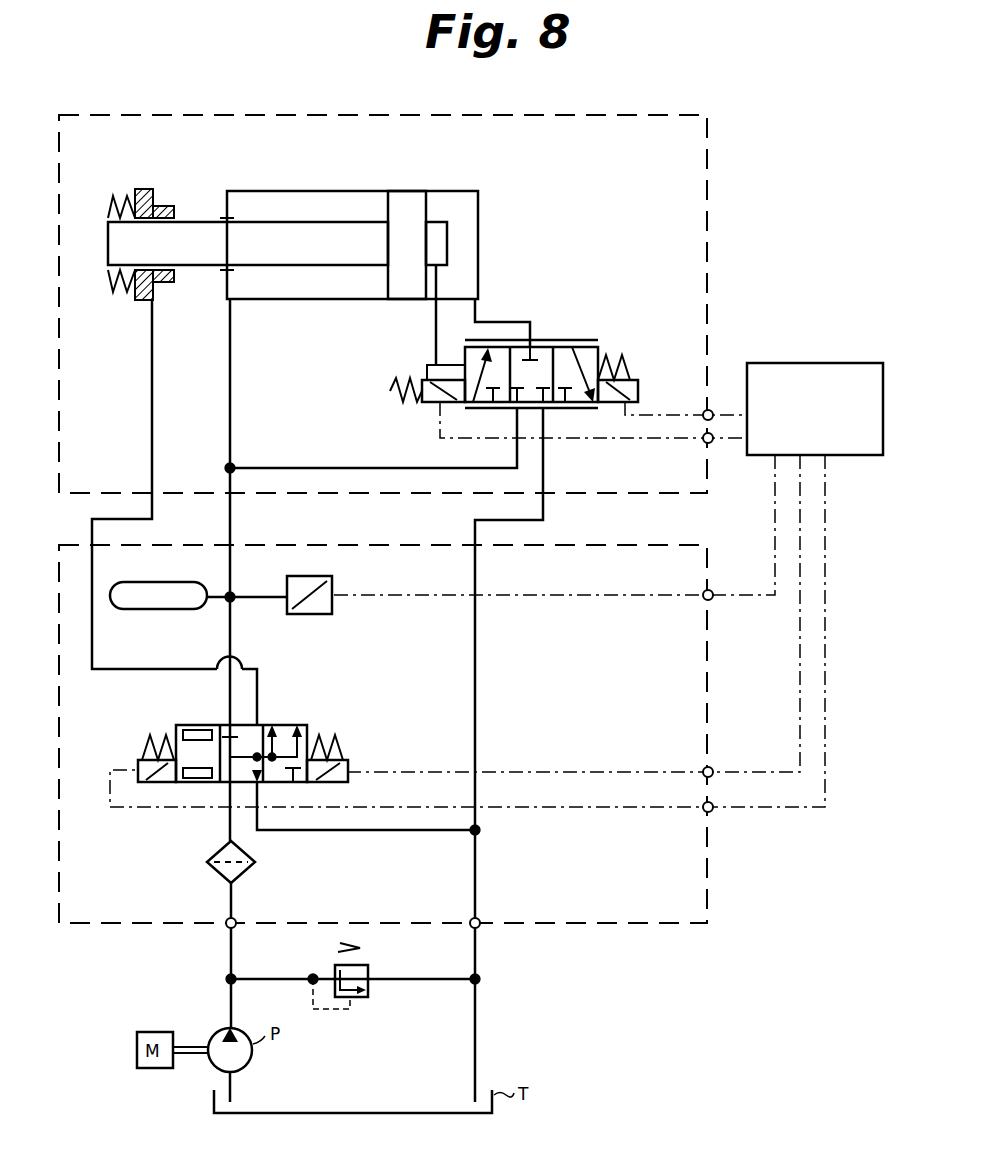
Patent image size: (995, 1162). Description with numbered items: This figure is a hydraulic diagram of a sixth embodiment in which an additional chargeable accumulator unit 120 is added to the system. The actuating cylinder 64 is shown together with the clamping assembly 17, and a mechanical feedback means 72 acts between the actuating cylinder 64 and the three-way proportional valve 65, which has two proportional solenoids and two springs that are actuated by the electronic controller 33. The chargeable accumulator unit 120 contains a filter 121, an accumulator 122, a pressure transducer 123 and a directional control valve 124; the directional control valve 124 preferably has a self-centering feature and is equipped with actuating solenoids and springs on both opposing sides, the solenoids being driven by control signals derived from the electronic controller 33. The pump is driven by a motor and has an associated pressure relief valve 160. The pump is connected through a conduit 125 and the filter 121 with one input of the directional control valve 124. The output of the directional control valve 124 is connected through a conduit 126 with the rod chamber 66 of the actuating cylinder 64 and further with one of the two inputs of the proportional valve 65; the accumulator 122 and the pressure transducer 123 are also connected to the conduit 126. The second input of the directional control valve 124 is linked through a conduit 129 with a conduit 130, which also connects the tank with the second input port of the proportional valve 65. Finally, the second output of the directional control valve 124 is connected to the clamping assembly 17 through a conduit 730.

The clamping assembly 17 is at (140, 300).
The electronic controller 33 is at (837, 362).
The actuating cylinder 64 is at (360, 190).
The three-way proportional valve 65 is at (585, 348).
The rod chamber 66 is at (272, 300).
The mechanical feedback means 72 is at (434, 332).
The chargeable accumulator unit 120 is at (708, 885).
The filter 121 is at (248, 875).
The accumulator 122 is at (178, 602).
The pressure transducer 123 is at (333, 580).
The directional control valve 124 is at (314, 710).
The conduit 125 is at (228, 952).
The conduit 126 is at (232, 400).
The conduit 129 is at (403, 831).
The conduit 130 is at (477, 872).
The pressure relief valve 160 is at (360, 962).
The conduit 730 is at (116, 668).